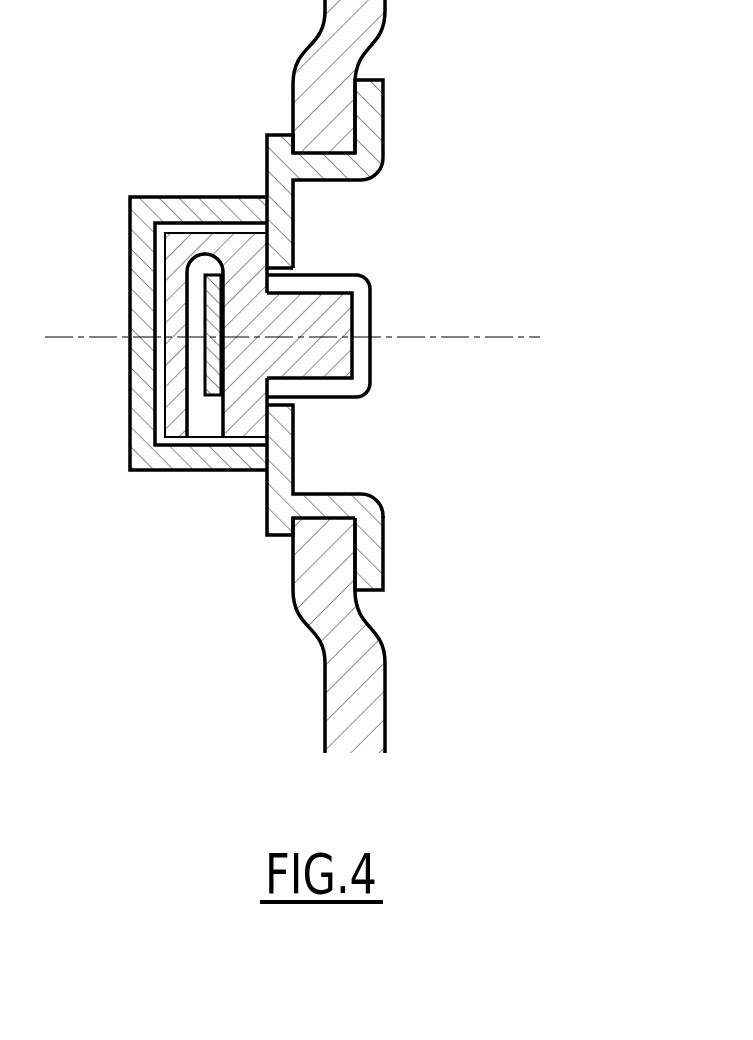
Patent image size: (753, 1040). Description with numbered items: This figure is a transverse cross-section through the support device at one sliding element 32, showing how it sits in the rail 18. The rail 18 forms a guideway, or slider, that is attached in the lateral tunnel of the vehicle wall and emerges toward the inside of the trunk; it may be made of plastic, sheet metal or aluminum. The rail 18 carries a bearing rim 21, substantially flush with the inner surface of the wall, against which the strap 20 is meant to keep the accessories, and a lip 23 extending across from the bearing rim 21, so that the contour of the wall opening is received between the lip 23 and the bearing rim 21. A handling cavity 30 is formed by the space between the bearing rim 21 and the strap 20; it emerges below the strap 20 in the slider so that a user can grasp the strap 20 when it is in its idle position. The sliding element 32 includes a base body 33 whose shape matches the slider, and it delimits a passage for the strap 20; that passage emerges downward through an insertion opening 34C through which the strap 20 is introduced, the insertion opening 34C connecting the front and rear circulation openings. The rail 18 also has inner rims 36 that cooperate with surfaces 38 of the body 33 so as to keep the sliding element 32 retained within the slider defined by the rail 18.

The rail 18 is at (138, 274).
The strap 20 is at (210, 381).
The bearing rim 21 is at (372, 553).
The lip 23 is at (278, 518).
The handling cavity 30 is at (322, 228).
The sliding element 32 is at (192, 246).
The base body 33 is at (181, 258).
The insertion opening 34C is at (212, 400).
The inner rim 36 is at (280, 258).
The surface 38 is at (269, 256).